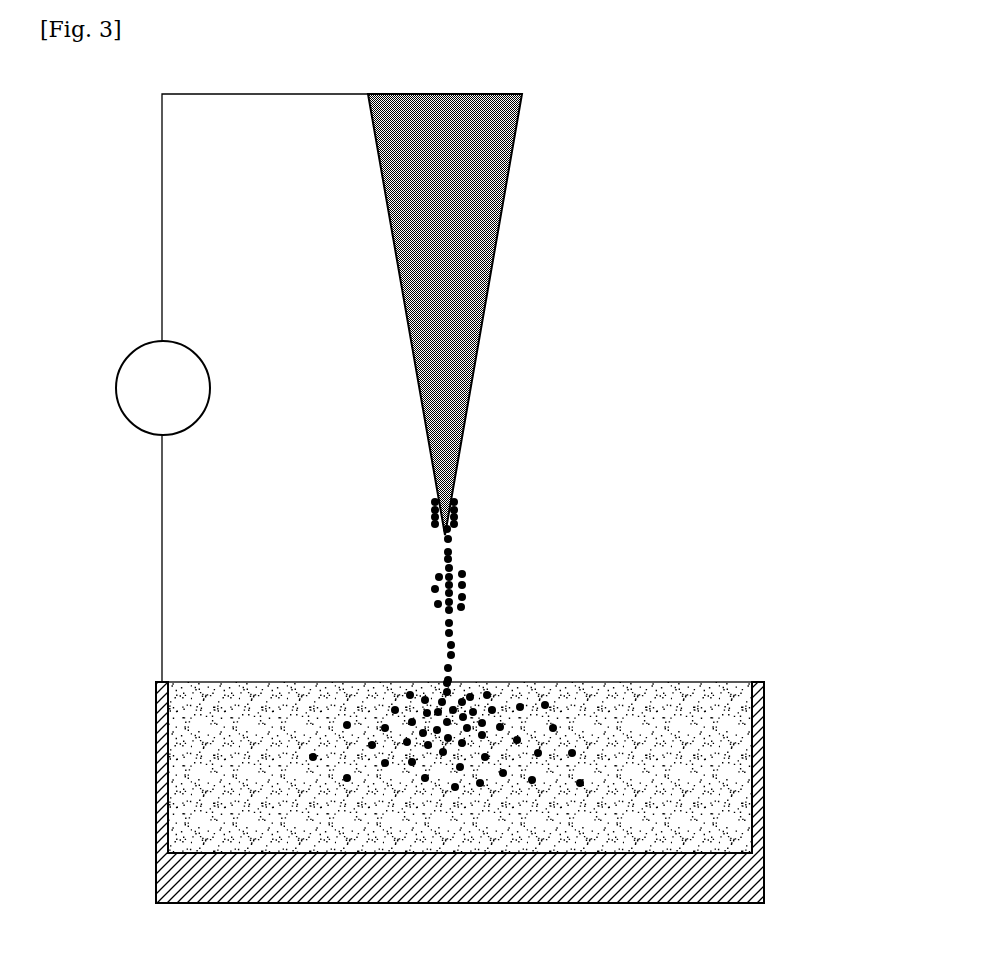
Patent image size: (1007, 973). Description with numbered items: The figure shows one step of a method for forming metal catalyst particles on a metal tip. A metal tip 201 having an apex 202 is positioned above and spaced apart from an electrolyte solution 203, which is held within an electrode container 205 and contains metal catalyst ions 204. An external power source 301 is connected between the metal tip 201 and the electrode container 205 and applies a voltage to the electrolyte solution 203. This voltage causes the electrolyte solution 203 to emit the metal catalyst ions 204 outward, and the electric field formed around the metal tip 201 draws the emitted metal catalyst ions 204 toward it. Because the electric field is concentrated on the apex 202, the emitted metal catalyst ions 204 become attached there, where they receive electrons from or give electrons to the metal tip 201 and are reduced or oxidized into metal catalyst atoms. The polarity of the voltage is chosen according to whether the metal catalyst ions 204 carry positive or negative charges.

The metal tip 201 is at (467, 317).
The apex 202 is at (455, 524).
The electrolyte solution 203 is at (672, 676).
The metal catalyst ions 204 is at (465, 586).
The electrode container 205 is at (764, 870).
The external power source 301 is at (132, 350).